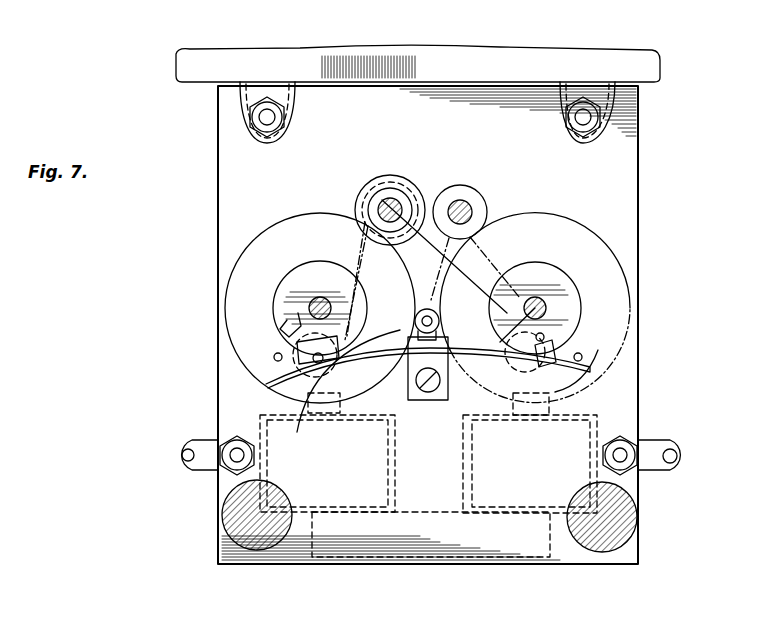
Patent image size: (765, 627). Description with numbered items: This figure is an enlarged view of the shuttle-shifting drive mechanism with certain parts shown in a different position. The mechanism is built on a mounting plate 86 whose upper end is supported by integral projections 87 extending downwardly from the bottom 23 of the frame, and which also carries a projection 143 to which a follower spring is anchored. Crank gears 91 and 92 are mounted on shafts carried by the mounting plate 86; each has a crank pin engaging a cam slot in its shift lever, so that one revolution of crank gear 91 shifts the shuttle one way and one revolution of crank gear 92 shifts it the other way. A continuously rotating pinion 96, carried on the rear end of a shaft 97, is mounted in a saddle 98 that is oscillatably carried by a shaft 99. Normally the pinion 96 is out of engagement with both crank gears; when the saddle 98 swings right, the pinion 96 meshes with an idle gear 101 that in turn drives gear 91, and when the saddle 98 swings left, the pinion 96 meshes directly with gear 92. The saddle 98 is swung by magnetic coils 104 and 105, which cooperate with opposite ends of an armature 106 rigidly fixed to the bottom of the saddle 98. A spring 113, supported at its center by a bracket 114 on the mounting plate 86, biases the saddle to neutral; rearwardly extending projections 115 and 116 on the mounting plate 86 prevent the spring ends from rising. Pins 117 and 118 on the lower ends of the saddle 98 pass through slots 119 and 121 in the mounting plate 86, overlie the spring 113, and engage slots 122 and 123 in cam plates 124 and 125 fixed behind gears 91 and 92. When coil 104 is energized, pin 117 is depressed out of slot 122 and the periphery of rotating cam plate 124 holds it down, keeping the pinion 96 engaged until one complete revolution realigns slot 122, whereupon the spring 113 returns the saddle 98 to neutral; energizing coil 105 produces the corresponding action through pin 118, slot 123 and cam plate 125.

The bottom of the frame 23 is at (414, 62).
The mounting plate 86 is at (437, 528).
The integral projections 87 is at (248, 118).
The crank gear 91 is at (605, 243).
The crank gear 92 is at (236, 248).
The pinion 96 is at (406, 186).
The shaft 97 is at (386, 205).
The saddle 98 is at (359, 263).
The shaft 99 is at (427, 309).
The idle gear 101 is at (471, 192).
The magnetic coil 104 is at (591, 431).
The magnetic coil 105 is at (262, 438).
The armature 106 is at (386, 403).
The spring 113 is at (392, 349).
The bracket 114 is at (448, 346).
The rearwardly extending projection 115 is at (582, 356).
The rearwardly extending projection 116 is at (274, 356).
The projection (pin) 117 is at (549, 339).
The projection (pin) 118 is at (272, 376).
The slot 119 is at (560, 381).
The slot 121 is at (302, 401).
The slot 122 is at (551, 351).
The slot 123 is at (276, 322).
The cam plate 124 is at (576, 297).
The cam plate 125 is at (288, 290).
The projection 143 is at (184, 456).